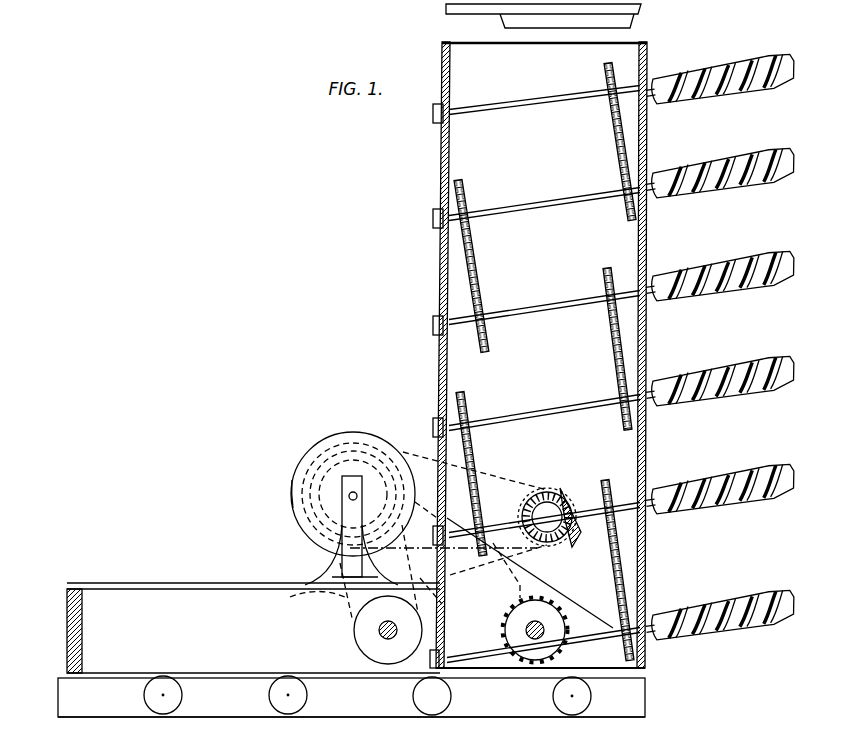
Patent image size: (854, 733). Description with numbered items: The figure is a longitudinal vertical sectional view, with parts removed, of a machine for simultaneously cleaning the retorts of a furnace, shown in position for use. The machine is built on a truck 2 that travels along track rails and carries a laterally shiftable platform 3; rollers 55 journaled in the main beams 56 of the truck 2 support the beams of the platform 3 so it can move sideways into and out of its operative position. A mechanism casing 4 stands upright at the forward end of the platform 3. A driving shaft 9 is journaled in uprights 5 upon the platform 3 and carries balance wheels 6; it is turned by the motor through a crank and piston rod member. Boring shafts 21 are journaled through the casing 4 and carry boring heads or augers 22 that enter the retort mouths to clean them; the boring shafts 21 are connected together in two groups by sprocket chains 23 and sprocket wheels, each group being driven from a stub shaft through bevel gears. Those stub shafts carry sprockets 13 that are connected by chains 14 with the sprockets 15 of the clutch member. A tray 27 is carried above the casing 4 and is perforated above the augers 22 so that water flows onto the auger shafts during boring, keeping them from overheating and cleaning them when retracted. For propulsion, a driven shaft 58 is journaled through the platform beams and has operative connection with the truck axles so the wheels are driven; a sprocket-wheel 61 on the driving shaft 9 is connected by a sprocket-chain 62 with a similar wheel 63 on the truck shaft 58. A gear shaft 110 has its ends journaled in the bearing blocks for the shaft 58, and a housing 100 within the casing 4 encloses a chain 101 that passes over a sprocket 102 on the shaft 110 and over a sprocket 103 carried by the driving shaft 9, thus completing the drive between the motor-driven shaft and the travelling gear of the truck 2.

The truck 2 is at (58, 697).
The platform 3 is at (67, 628).
The mechanism casing 4 is at (440, 259).
The uprights 5 is at (352, 512).
The balance wheels 6 is at (353, 487).
The driving shaft 9 is at (357, 496).
The sprockets 13 is at (550, 492).
The chains 14 is at (428, 458).
The sprockets 15 is at (318, 452).
The boring shafts 21 is at (530, 312).
The boring heads or augers 22 is at (722, 167).
The sprocket chains 23 is at (603, 350).
The tray 27 is at (630, 18).
The rollers 55 is at (367, 695).
The main beams 56 is at (351, 703).
The driven shaft 58 is at (386, 630).
The sprocket-wheel 61 is at (292, 484).
The sprocket-chain 62 is at (292, 588).
The sprocket-wheel 63 is at (388, 641).
The housing 100 is at (567, 592).
The chain 101 is at (474, 569).
The sprocket 102 is at (512, 630).
The sprocket 103 is at (344, 450).
The gear shaft 110 is at (532, 627).